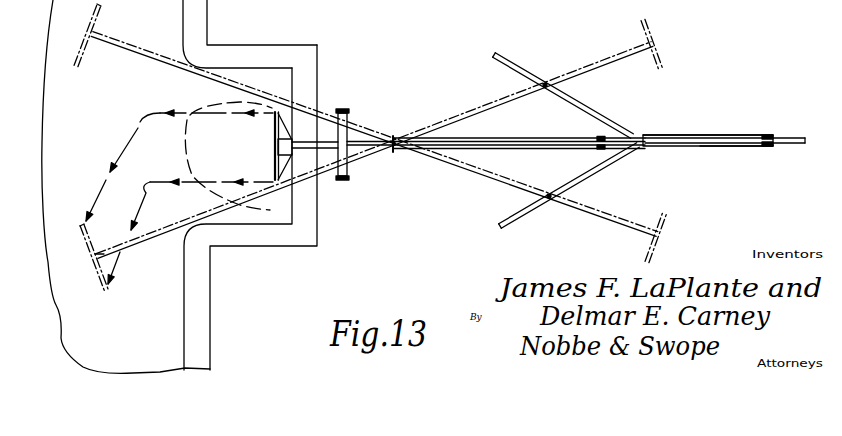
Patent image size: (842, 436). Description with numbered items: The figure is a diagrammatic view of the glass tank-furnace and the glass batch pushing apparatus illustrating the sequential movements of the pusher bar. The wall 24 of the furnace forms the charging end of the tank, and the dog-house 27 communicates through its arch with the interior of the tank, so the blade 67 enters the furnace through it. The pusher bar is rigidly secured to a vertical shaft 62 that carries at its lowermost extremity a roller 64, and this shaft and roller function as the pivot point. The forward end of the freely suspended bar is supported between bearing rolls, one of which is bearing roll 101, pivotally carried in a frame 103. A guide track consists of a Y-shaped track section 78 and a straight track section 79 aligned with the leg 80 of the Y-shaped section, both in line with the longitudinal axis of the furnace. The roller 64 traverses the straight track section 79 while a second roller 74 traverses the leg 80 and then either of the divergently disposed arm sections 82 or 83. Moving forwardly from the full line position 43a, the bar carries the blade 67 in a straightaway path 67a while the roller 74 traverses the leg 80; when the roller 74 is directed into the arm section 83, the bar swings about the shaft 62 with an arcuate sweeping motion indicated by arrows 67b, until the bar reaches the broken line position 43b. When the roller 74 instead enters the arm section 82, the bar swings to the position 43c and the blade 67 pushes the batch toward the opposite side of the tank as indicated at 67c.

The wall 24 is at (190, 13).
The dog-house 27 is at (288, 62).
The full line position of pusher bar 43a is at (688, 146).
The broken line position of pusher bar 43b is at (580, 71).
The position of pusher bar 43c is at (585, 208).
The shaft 62 is at (397, 138).
The roller 64 is at (395, 152).
The blade 67 is at (275, 144).
The straightaway path of blade 67a is at (190, 112).
The arrows indicating arcuate sweeping motion 67b is at (120, 203).
The blade position 67c is at (100, 12).
The roller 74 is at (545, 83).
The Y-shaped track section 78 is at (736, 130).
The straight track section 79 is at (518, 149).
The leg 80 is at (697, 135).
The arm section 82 is at (618, 158).
The arm section 83 is at (583, 107).
The bearing roll 101 is at (343, 133).
The frame 103 is at (344, 109).